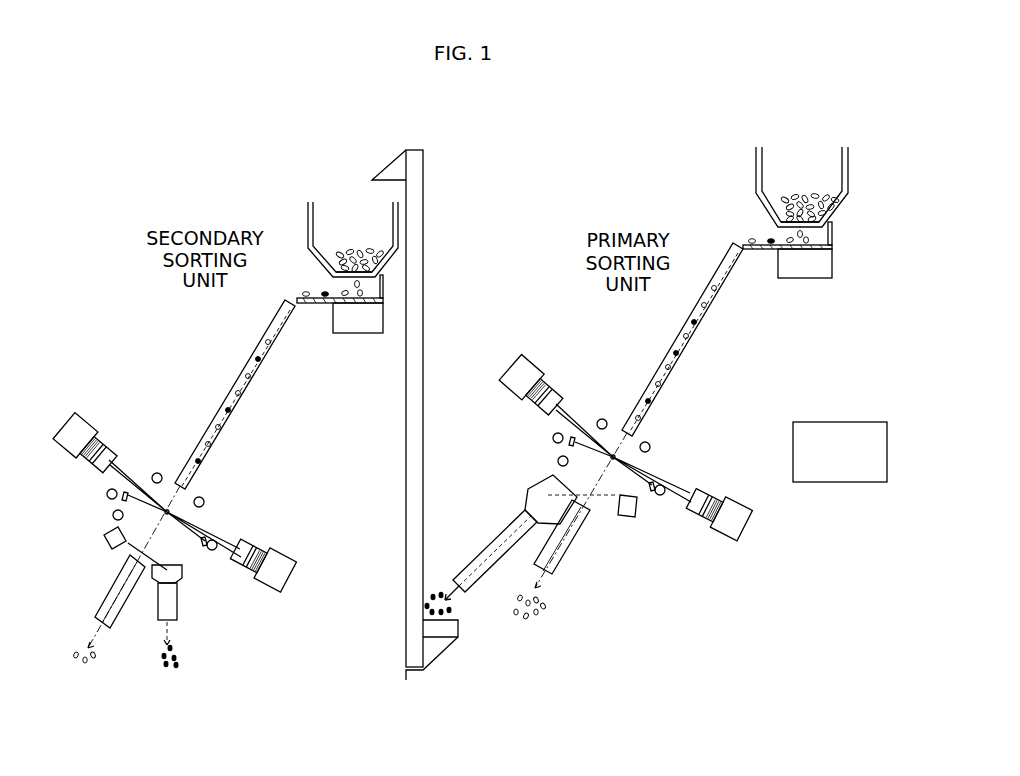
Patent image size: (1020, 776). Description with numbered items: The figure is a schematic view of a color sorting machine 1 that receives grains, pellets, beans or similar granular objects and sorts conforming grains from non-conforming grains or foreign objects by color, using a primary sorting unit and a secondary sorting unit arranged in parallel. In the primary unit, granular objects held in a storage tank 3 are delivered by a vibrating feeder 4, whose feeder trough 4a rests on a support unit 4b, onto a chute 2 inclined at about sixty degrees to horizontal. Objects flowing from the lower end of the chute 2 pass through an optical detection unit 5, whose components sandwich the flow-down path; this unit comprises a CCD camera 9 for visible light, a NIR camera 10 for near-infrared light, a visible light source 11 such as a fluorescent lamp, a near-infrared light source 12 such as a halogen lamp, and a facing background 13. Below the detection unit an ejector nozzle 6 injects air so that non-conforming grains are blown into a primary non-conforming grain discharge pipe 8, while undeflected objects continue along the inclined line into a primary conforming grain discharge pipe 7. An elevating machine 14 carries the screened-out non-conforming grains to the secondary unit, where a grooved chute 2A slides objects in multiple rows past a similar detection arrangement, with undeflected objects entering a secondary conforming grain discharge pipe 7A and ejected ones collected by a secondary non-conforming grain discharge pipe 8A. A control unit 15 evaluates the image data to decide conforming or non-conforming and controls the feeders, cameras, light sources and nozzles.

The color sorting machine 1 is at (603, 188).
The chute 2 is at (700, 325).
The chute for secondary sorting 2A is at (256, 378).
The storage tank 3 is at (848, 172).
The vibrating feeder 4 is at (884, 232).
The feeder trough 4a is at (832, 233).
The support unit 4b is at (828, 262).
The optical detection unit 5 is at (600, 417).
The ejector nozzle 6 is at (630, 515).
The primary conforming grain discharge pipe 7 is at (578, 560).
The secondary conforming grain discharge pipe 7A is at (120, 600).
The primary non-conforming grain discharge pipe 8 is at (467, 568).
The secondary non-conforming grain discharge pipe 8A is at (177, 603).
The CCD camera 9 is at (537, 375).
The NIR camera 10 is at (723, 530).
The visible light source 11 is at (648, 442).
The near-infrared light source 12 is at (557, 448).
The background 13 is at (553, 437).
The elevating machine 14 is at (410, 680).
The control unit 15 is at (832, 430).